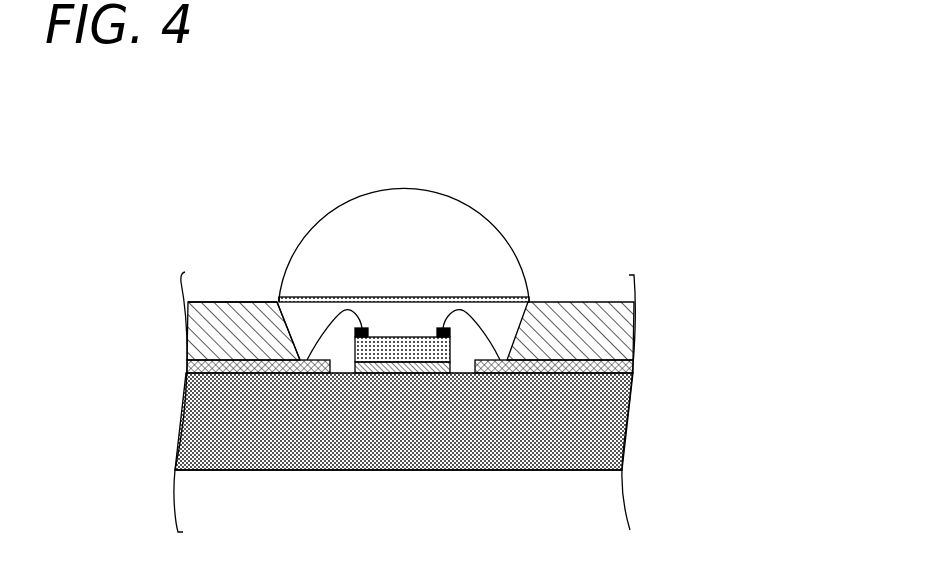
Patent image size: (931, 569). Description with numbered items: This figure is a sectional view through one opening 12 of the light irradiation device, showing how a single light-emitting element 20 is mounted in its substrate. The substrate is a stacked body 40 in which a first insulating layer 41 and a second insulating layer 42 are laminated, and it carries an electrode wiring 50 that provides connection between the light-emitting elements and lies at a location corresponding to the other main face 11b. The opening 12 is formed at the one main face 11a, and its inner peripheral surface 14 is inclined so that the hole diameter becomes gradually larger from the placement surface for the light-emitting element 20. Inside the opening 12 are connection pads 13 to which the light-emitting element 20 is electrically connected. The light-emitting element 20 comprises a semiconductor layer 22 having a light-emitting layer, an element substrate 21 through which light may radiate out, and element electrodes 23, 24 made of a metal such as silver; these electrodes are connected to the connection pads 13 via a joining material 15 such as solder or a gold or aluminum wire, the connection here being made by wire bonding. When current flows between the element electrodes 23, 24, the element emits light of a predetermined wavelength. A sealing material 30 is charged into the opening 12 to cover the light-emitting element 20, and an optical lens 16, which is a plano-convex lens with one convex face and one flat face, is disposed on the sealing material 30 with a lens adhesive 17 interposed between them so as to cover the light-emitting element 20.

The one main face 11a is at (197, 298).
The other main face 11b is at (213, 470).
The opening 12 is at (475, 312).
The connection pad 13 is at (503, 360).
The inner peripheral surface 14 is at (284, 312).
The joining material 15 is at (322, 338).
The optical lens 16 is at (520, 262).
The lens adhesive 17 is at (520, 298).
The light-emitting element 20 is at (403, 208).
The element substrate 21 is at (410, 367).
The semiconductor layer 22 is at (401, 350).
The element electrode 23 is at (444, 328).
The element electrode 24 is at (362, 328).
The sealing material 30 is at (310, 322).
The stacked body 40 is at (497, 381).
The first insulating layer 41 is at (610, 415).
The second insulating layer 42 is at (617, 328).
The electrode wiring 50 is at (190, 365).